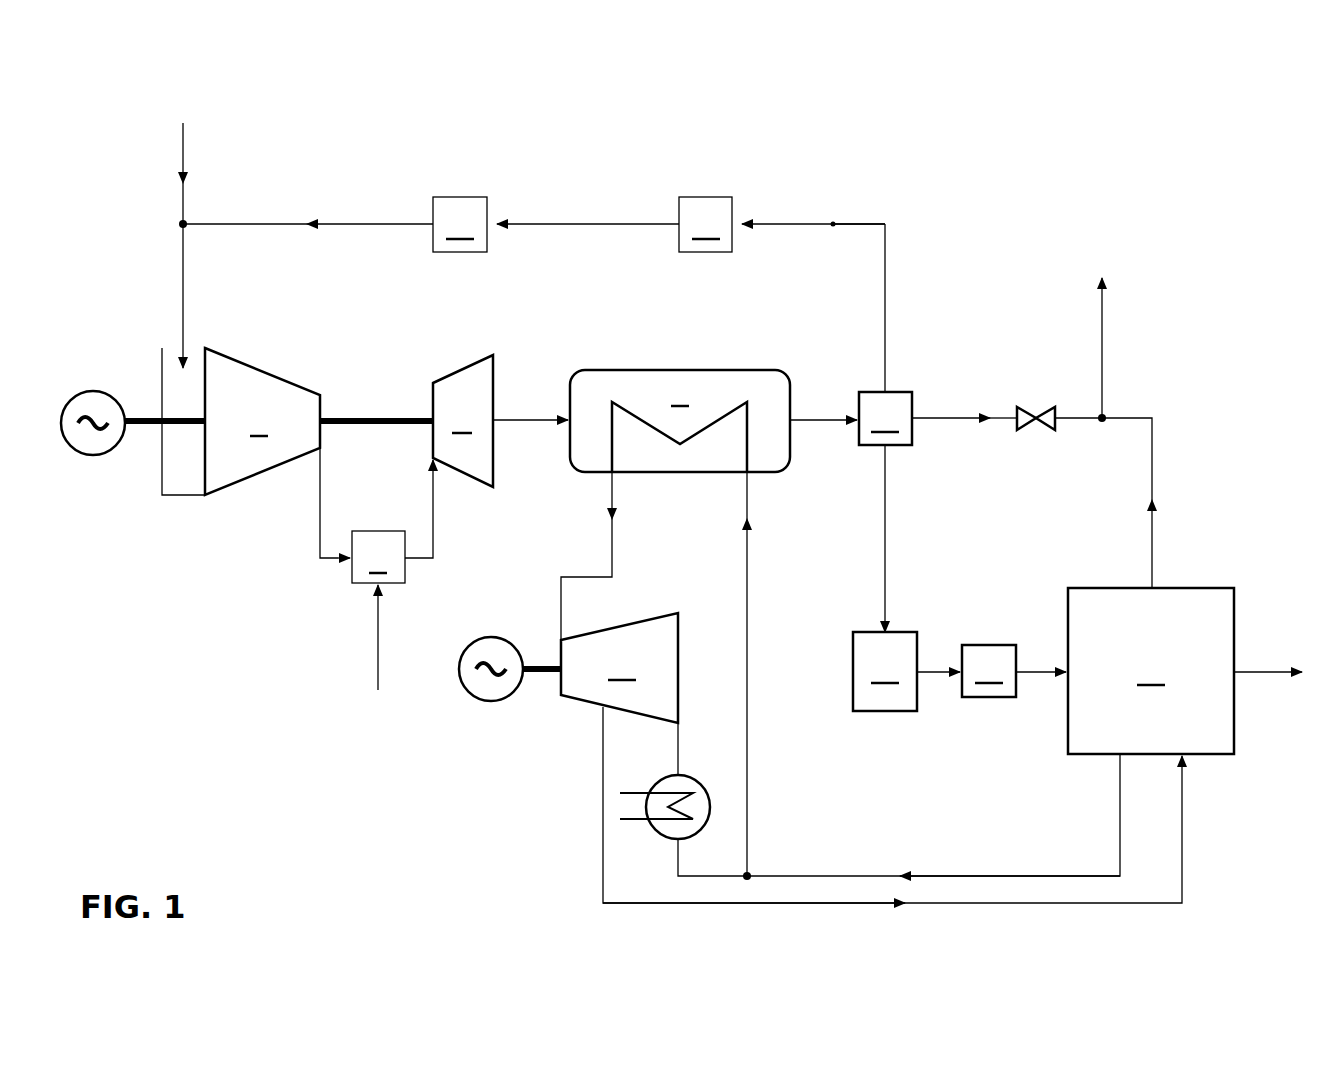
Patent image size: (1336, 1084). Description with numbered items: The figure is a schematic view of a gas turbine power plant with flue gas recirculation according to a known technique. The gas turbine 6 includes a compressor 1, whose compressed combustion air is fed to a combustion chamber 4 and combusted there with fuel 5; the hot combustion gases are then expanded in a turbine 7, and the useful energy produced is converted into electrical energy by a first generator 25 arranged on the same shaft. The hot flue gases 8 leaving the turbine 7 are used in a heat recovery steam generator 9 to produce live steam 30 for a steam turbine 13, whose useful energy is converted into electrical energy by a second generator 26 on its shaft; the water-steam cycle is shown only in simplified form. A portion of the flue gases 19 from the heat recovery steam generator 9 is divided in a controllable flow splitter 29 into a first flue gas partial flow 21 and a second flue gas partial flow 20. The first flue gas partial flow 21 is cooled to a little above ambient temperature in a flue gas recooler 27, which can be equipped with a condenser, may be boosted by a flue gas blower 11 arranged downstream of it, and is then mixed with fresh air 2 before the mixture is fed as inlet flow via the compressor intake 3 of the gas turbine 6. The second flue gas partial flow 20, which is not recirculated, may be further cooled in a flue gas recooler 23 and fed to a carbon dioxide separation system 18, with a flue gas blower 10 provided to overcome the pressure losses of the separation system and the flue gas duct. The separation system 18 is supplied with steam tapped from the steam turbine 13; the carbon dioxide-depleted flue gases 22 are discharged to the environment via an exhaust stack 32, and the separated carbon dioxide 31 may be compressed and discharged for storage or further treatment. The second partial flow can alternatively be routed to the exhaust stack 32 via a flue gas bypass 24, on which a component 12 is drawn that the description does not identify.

The compressor 1 is at (262, 421).
The fresh air 2 is at (181, 150).
The compressor intake 3 is at (185, 466).
The combustion chamber 4 is at (376, 515).
The fuel 5 is at (377, 655).
The gas turbine 6 is at (366, 377).
The turbine 7 is at (463, 421).
The hot flue gases 8 is at (525, 418).
The heat recovery steam generator 9 is at (680, 421).
The flue gas blower 10 is at (1014, 671).
The flue gas blower 11 is at (431, 224).
The valve 12 is at (1036, 418).
The steam turbine 13 is at (871, 687).
The CO2 separation system 18 is at (1151, 671).
The flue gases 19 is at (820, 418).
The second flue gas partial flow 20 is at (885, 543).
The first flue gas partial flow 21 is at (833, 222).
The CO2-depleted flue gases 22 is at (1125, 416).
The flue gas recooler 23 is at (906, 671).
The flue gas bypass 24 is at (956, 418).
The first generator 25 is at (93, 438).
The second generator 26 is at (491, 685).
The flue gas recooler 27 is at (782, 294).
The flow splitter 29 is at (885, 418).
The live steam 30 is at (612, 537).
The CO2 31 is at (1267, 674).
The exhaust stack 32 is at (1103, 330).